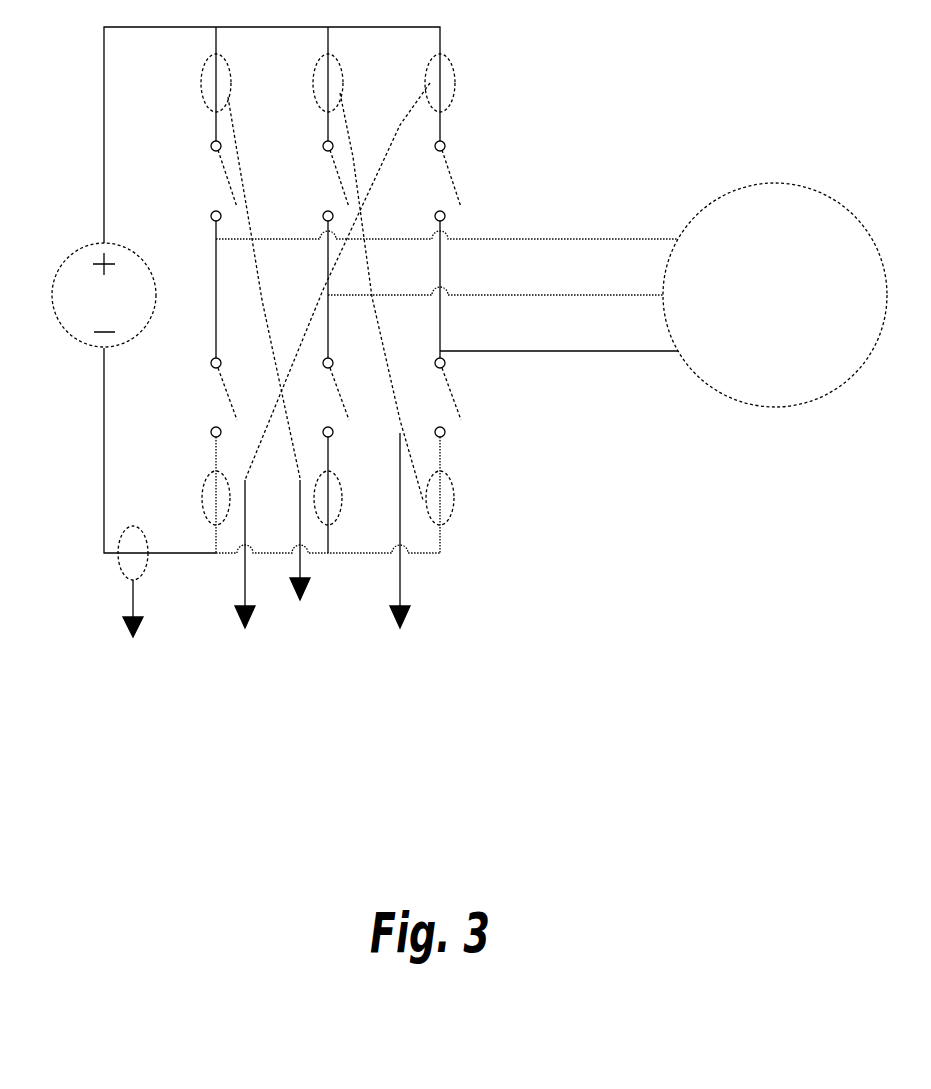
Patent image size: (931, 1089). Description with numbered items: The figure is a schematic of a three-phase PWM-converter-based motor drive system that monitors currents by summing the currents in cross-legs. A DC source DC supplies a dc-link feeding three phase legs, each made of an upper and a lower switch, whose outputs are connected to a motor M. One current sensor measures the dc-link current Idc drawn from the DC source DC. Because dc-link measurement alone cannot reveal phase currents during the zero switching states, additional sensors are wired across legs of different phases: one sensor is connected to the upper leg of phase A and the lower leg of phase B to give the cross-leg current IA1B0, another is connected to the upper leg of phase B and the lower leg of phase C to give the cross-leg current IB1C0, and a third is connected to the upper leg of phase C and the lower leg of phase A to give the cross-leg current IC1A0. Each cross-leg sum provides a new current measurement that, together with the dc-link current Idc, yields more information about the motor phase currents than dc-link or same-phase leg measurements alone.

The DC source DC is at (83, 295).
The motor M is at (775, 295).
The dc-link current Idc is at (134, 607).
The cross-leg current of phase C upper leg and phase A lower leg IC1A0 is at (244, 584).
The cross-leg current of phase A upper leg and phase B lower leg IA1B0 is at (318, 561).
The cross-leg current of phase B upper leg and phase C lower leg IB1C0 is at (399, 560).